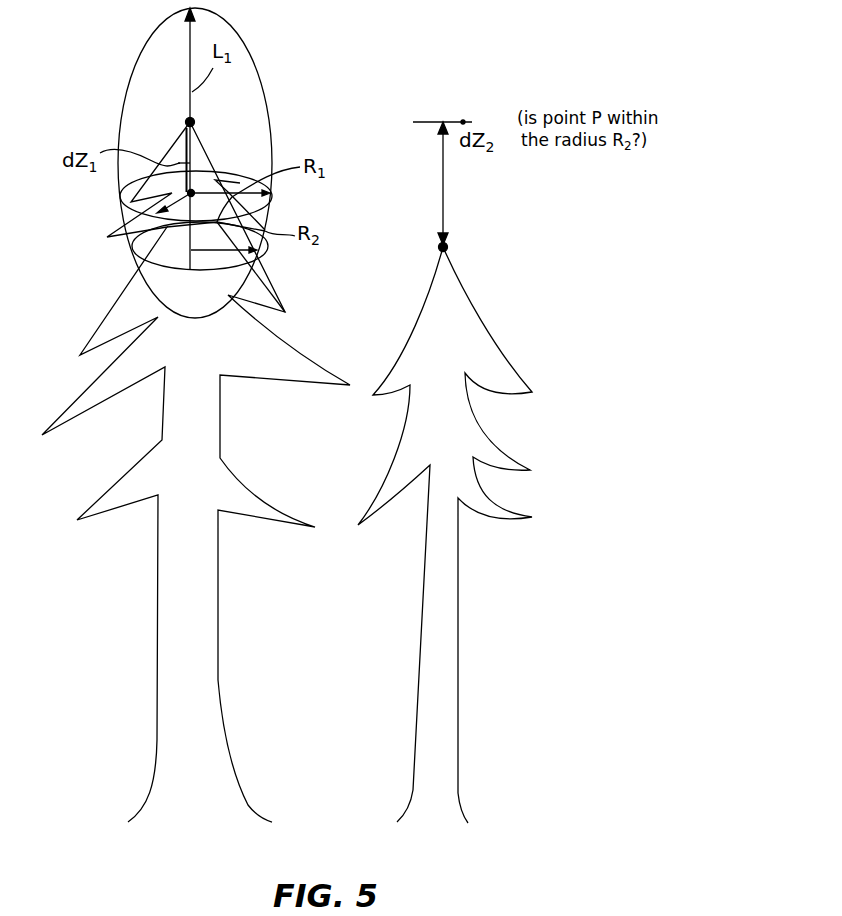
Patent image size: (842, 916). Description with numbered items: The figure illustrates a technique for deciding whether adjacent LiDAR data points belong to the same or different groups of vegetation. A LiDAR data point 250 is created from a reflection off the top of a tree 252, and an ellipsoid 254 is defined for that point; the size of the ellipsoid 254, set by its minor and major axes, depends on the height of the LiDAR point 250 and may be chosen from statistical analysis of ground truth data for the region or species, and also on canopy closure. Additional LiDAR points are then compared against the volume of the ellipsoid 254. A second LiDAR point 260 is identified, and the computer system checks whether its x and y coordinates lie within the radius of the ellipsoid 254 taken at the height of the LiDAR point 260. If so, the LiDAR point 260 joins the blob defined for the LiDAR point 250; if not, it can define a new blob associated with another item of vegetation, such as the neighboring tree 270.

The LiDAR data point 250 is at (192, 122).
The tree 252 is at (177, 640).
The ellipsoid 254 is at (250, 53).
The LiDAR point 260 is at (443, 247).
The tree 270 is at (443, 640).